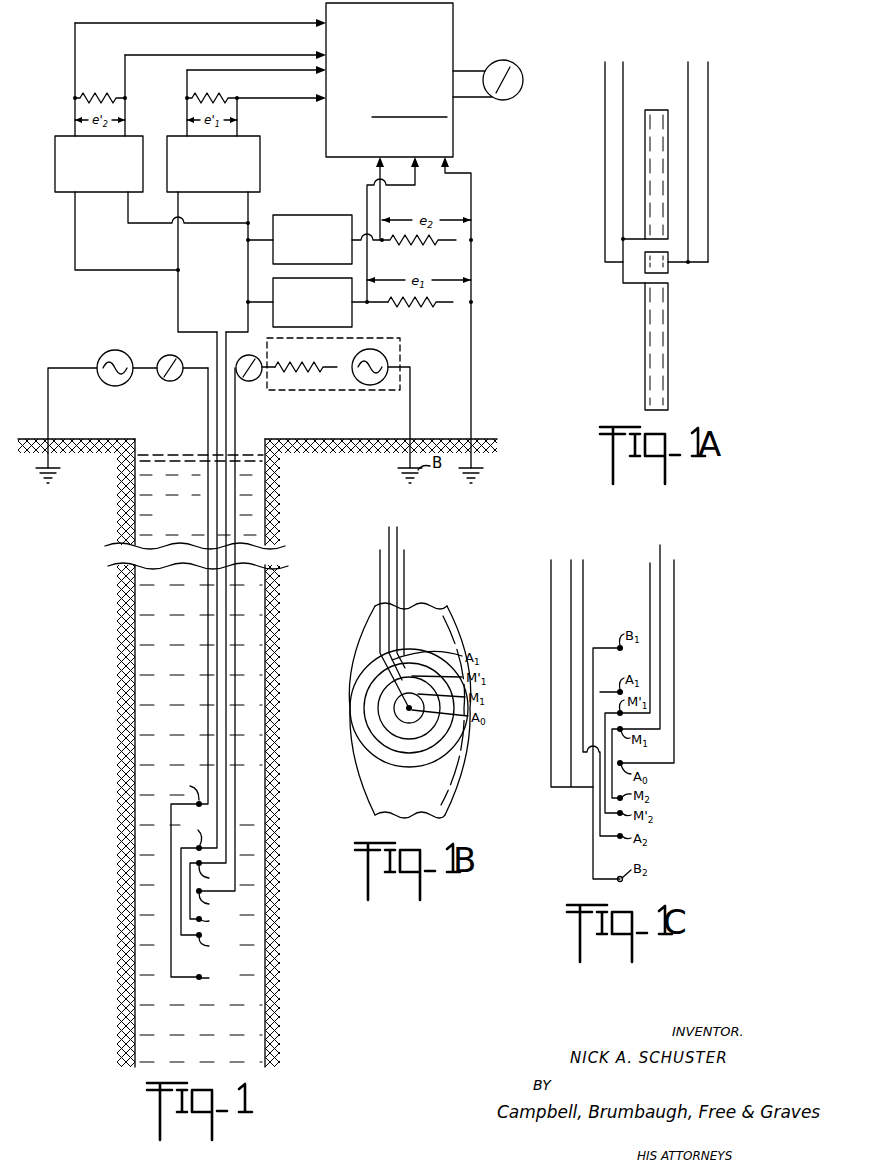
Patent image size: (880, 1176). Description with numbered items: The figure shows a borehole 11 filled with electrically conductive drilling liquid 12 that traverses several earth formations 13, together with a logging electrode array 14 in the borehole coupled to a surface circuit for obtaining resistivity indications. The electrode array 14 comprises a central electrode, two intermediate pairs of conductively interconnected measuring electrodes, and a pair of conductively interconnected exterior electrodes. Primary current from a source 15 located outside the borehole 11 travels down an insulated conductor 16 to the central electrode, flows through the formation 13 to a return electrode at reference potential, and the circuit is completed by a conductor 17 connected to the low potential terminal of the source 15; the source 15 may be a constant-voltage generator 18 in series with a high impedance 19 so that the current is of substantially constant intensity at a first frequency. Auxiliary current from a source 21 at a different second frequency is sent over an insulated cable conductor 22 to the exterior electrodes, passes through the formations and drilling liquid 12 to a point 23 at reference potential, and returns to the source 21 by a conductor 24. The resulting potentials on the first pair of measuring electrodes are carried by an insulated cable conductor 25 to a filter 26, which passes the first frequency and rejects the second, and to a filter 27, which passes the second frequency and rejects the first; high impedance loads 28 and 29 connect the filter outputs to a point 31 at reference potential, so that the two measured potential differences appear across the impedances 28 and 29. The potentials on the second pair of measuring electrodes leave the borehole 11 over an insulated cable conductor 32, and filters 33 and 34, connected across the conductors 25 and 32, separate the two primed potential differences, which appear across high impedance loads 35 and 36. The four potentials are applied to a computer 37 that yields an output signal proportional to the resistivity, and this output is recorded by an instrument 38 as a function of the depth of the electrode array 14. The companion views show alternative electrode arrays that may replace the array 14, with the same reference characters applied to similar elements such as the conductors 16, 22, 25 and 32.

In FIG. 1, the borehole 11 is at (137, 452).
In FIG. 1, the drilling liquid 12 is at (182, 525).
In FIG. 1, the earth formations 13 is at (302, 657).
In FIG. 1, the electrode array 14 is at (165, 915).
In FIG. 1, the source 15 is at (319, 391).
In FIG. 1, the insulated conductor 16 is at (236, 711).
In FIG. 1A, the insulated conductor 16 is at (708, 100).
In FIG. 1B, the insulated conductor 16 is at (380, 565).
In FIG. 1C, the insulated conductor 16 is at (674, 575).
In FIG. 1, the conductor 17 is at (412, 398).
In FIG. 1, the constant-voltage generator 18 is at (370, 385).
In FIG. 1, the high impedance 19 is at (300, 366).
In FIG. 1, the source 21 is at (117, 386).
In FIG. 1, the insulated cable conductor 22 is at (208, 712).
In FIG. 1A, the insulated cable conductor 22 is at (605, 96).
In FIG. 1B, the insulated cable conductor 22 is at (406, 565).
In FIG. 1C, the insulated cable conductor 22 is at (583, 606).
In FIG. 1, the point at reference potential 23 is at (60, 472).
In FIG. 1, the conductor 24 is at (50, 422).
In FIG. 1, the insulated cable conductor 25 is at (237, 331).
In FIG. 1A, the insulated cable conductor 25 is at (688, 74).
In FIG. 1B, the insulated cable conductor 25 is at (389, 538).
In FIG. 1C, the insulated cable conductor 25 is at (660, 545).
In FIG. 1, the filter 26 is at (352, 318).
In FIG. 1, the filter 27 is at (337, 215).
In FIG. 1, the high impedance load 28 is at (430, 312).
In FIG. 1, the high impedance load 29 is at (424, 248).
In FIG. 1, the point at reference potential 31 is at (478, 470).
In FIG. 1, the insulated cable conductor 32 is at (178, 298).
In FIG. 1A, the insulated cable conductor 32 is at (623, 97).
In FIG. 1B, the insulated cable conductor 32 is at (398, 538).
In FIG. 1C, the insulated cable conductor 32 is at (650, 567).
In FIG. 1, the filter 33 is at (260, 167).
In FIG. 1, the filter 34 is at (55, 172).
In FIG. 1, the high impedance load 35 is at (217, 94).
In FIG. 1, the high impedance load 36 is at (110, 93).
In FIG. 1, the computer 37 is at (453, 127).
In FIG. 1, the instrument 38 is at (517, 70).